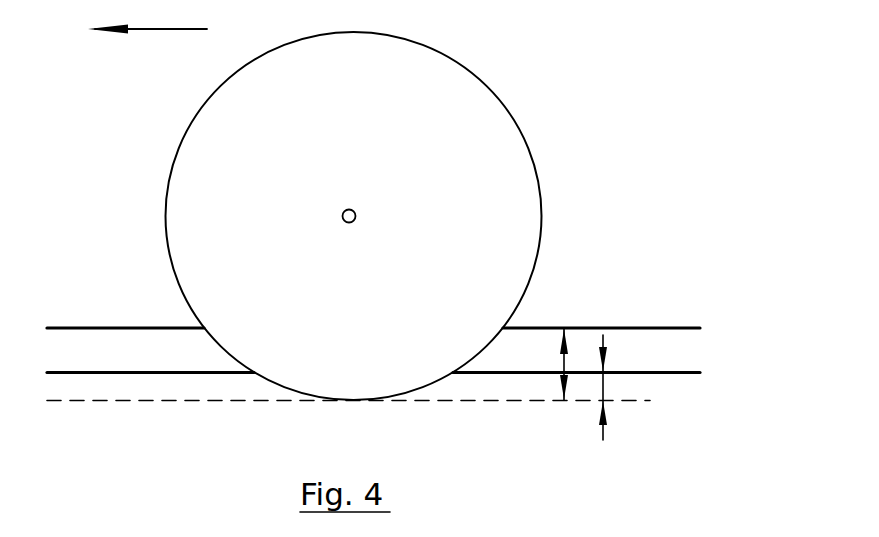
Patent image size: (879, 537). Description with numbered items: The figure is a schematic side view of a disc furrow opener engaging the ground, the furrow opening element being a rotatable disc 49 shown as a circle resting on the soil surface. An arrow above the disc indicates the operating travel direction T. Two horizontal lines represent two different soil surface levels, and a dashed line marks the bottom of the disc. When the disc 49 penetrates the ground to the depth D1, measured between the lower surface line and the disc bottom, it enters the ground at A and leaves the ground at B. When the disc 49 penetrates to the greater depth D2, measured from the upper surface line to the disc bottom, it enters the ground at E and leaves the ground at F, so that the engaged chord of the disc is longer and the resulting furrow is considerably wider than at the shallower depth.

The rotatable disc 49 is at (487, 79).
The operating travel direction T is at (133, 30).
The ground entry point at greater depth E is at (206, 316).
The ground exit point at greater depth F is at (503, 327).
The ground entry point at shallower depth A is at (254, 363).
The ground exit point at shallower depth B is at (453, 369).
The penetration depth D1 is at (603, 385).
The greater penetration depth D2 is at (565, 355).